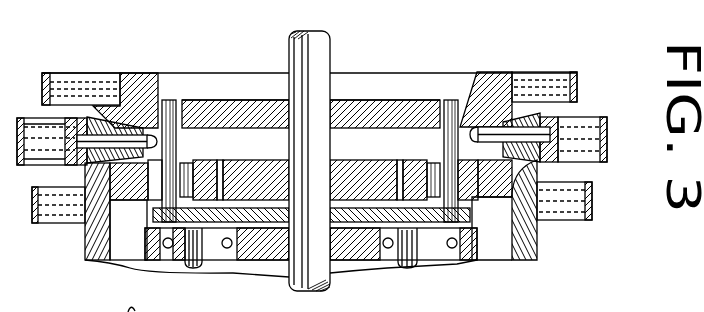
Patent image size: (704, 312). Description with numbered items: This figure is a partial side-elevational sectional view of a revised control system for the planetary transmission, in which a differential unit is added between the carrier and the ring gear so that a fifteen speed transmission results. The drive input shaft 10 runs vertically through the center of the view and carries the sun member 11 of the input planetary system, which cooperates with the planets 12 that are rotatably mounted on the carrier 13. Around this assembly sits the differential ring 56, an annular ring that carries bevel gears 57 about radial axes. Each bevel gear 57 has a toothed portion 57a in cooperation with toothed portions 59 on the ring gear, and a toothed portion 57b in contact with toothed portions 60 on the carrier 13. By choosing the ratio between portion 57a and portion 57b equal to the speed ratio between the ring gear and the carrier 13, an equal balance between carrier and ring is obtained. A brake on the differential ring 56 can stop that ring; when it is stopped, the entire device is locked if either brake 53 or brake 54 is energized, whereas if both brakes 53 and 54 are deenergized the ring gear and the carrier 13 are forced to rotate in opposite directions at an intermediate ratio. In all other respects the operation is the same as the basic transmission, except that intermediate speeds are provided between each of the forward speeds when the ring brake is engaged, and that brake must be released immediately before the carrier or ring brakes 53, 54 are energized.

The drive input shaft 10 is at (311, 90).
The sun member 11 is at (258, 170).
The planets 12 is at (140, 192).
The carrier 13 is at (228, 115).
The brake 53 is at (576, 86).
The brake 54 is at (591, 207).
The differential ring 56 is at (608, 140).
The bevel gears 57 is at (492, 127).
The toothed portion 57a is at (497, 199).
The toothed portion 57b is at (484, 198).
The toothed portions 59 is at (538, 232).
The toothed portions 60 is at (486, 127).